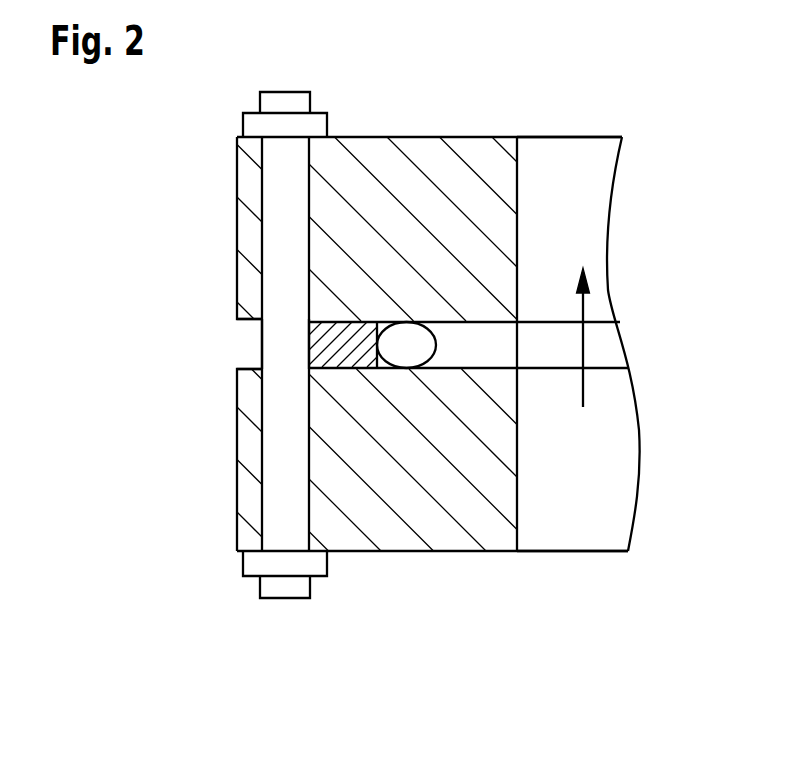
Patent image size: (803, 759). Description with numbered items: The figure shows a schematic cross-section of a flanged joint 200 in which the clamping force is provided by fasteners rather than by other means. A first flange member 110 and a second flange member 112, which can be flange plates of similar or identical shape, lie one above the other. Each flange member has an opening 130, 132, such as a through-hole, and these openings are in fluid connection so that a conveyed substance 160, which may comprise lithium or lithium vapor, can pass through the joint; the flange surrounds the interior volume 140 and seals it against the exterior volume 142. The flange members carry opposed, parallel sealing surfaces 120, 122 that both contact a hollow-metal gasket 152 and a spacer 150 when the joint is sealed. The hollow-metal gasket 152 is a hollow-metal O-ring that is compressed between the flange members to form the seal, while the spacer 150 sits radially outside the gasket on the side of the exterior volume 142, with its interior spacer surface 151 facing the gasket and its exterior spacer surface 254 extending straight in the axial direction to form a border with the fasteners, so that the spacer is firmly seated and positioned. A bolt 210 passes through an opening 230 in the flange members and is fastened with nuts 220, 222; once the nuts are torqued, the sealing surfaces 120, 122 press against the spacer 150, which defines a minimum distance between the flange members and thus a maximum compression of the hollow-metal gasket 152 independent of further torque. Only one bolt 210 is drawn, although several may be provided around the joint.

The first flange member 110 is at (237, 218).
The second flange member 112 is at (237, 477).
The first sealing surface 120 is at (243, 320).
The second sealing surface 122 is at (243, 369).
The opening of first flange member 130 is at (570, 137).
The opening of second flange member 132 is at (595, 552).
The interior volume 140 is at (548, 525).
The exterior volume 142 is at (118, 275).
The spacer 150 is at (348, 320).
The interior spacer surface 151 is at (382, 358).
The hollow-metal gasket 152 is at (438, 348).
The conveyed substance 160 is at (583, 343).
The flanged joint 200 is at (212, 634).
The bolt 210 is at (283, 598).
The nut 220 is at (243, 565).
The nut 222 is at (243, 125).
The opening 230 is at (258, 350).
The exterior spacer surface 254 is at (311, 341).